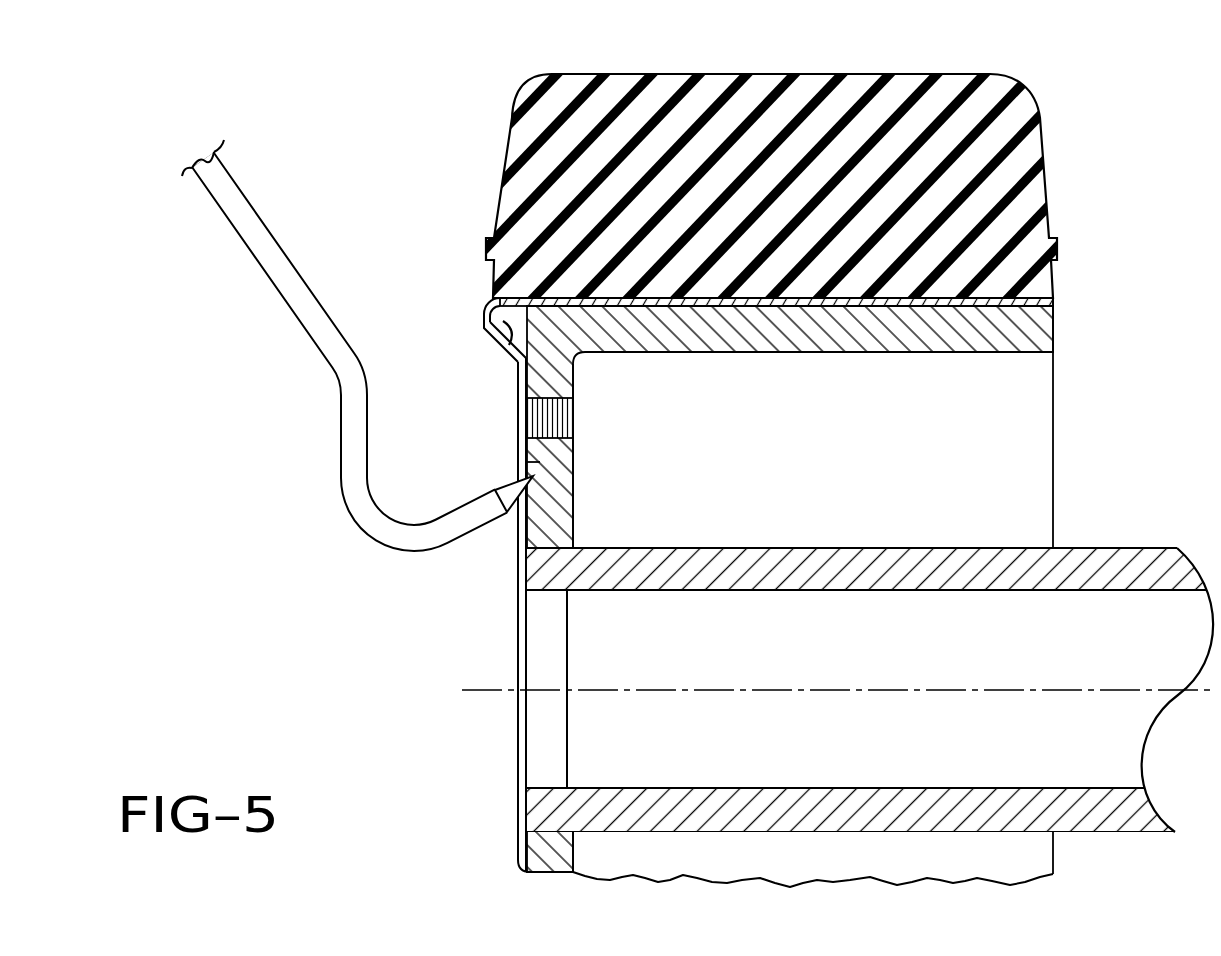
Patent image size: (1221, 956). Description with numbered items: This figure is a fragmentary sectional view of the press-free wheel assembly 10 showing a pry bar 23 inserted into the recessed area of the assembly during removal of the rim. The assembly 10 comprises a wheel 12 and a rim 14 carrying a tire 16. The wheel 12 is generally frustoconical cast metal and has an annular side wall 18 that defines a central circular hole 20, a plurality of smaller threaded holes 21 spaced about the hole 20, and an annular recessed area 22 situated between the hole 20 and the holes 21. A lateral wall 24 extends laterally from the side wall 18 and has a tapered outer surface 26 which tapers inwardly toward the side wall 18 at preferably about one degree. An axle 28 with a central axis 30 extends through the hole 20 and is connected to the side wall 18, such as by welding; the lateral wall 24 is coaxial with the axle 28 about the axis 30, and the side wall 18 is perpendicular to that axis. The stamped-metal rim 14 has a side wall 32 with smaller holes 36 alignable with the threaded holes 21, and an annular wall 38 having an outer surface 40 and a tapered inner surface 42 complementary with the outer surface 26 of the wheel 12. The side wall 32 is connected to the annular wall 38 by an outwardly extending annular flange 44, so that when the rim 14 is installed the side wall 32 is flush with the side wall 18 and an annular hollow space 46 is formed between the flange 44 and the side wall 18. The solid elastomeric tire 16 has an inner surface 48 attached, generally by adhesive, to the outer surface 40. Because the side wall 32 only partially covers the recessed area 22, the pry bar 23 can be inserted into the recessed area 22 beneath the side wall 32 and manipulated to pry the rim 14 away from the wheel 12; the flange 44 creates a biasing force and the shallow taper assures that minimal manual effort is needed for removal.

The wheel assembly 10 is at (776, 455).
The wheel 12 is at (849, 586).
The rim 14 is at (487, 303).
The tire 16 is at (1050, 181).
The annular side wall 18 is at (558, 516).
The central circular hole 20 is at (555, 828).
The threaded holes 21 is at (566, 413).
The annular recessed area 22 is at (533, 469).
The pry bar 23 is at (266, 224).
The lateral wall 24 is at (994, 356).
The tapered outer surface 26 is at (1030, 300).
The axle 28 is at (693, 547).
The central axis 30 is at (488, 688).
The side wall 32 is at (518, 456).
The holes 36 is at (520, 416).
The annular wall 38 is at (560, 292).
The outer surface 40 is at (601, 297).
The tapered inner surface 42 is at (828, 302).
The annular flange 44 is at (492, 321).
The annular hollow space 46 is at (501, 351).
The inner surface 48 is at (745, 300).